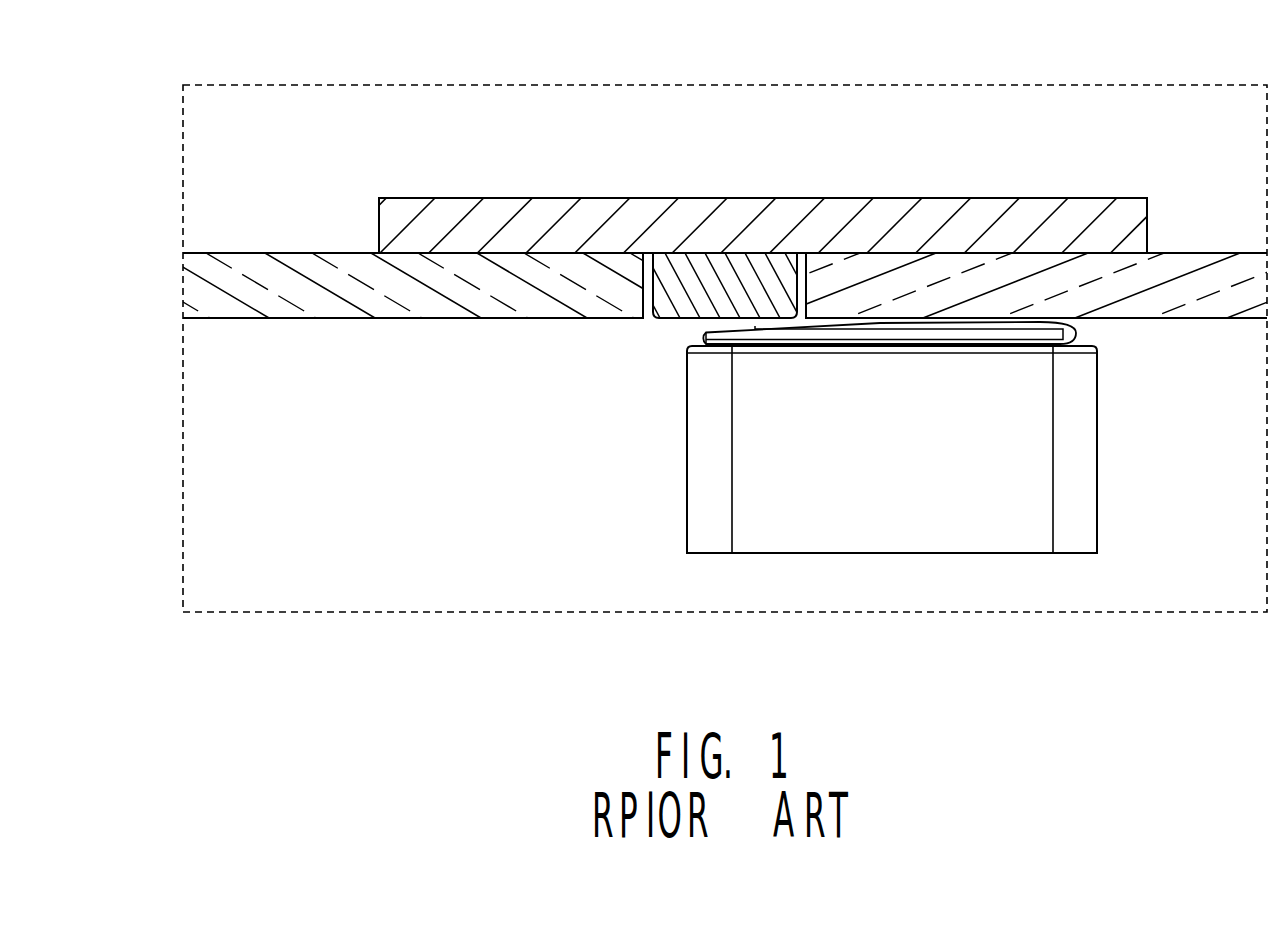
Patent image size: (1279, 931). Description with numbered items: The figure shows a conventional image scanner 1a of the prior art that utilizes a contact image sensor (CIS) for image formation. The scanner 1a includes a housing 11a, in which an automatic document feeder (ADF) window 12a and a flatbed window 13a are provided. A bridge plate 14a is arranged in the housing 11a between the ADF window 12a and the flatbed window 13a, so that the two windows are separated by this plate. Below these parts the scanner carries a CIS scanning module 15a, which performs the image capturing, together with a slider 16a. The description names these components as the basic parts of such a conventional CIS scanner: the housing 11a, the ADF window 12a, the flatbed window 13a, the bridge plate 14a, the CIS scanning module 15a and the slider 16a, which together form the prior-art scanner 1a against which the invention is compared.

The scanner 1a is at (241, 44).
The housing 11a is at (916, 230).
The automatic document feeder (ADF) window 12a is at (268, 284).
The flatbed window 13a is at (1214, 285).
The bridge plate 14a is at (689, 298).
The CIS scanning module 15a is at (1082, 496).
The slider 16a is at (1089, 334).